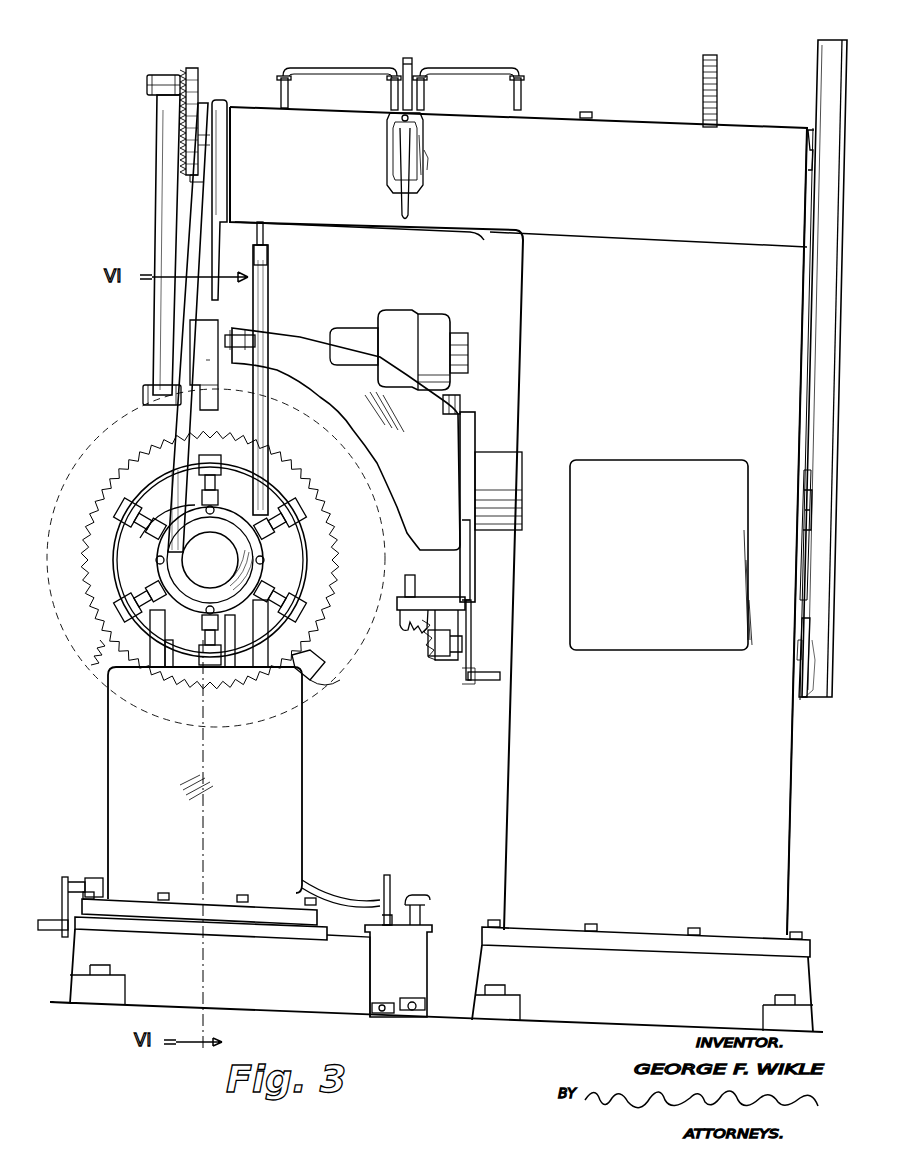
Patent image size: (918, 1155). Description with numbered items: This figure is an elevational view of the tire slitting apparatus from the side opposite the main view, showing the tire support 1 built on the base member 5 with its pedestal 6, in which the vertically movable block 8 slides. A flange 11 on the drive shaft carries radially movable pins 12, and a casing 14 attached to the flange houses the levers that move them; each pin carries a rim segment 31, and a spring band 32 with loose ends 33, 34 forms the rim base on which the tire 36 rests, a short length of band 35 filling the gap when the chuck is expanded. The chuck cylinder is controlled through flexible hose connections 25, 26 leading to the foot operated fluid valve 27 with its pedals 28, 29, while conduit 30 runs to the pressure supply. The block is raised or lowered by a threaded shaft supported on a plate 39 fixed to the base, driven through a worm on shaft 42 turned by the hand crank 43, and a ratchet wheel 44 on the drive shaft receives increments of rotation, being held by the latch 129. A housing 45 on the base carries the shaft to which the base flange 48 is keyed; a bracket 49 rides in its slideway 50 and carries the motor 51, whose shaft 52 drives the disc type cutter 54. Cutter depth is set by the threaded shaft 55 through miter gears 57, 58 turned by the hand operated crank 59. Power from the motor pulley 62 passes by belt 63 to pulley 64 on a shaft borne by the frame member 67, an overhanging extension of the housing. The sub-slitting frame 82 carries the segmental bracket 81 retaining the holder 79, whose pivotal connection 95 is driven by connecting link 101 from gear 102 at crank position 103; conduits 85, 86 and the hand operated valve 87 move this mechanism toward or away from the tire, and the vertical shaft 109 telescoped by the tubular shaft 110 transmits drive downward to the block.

The tire support 1 is at (298, 565).
The base member 5 is at (572, 1022).
The pedestal 6 is at (290, 805).
The vertically movable block 8 is at (262, 667).
The flange 11 is at (165, 508).
The radially movable pins 12 is at (160, 515).
The casing 14 is at (178, 571).
The flexible hose connection 25 is at (340, 890).
The flexible hose connection 26 is at (425, 898).
The foot operated fluid valve 27 is at (378, 975).
The pedal 28 is at (418, 1015).
The pedal 29 is at (390, 1015).
The conduit 30 is at (392, 880).
The rim segment 31 is at (132, 512).
The band 32 is at (130, 662).
The loose end of band 33 is at (175, 668).
The loose end of band 34 is at (232, 667).
The short length of band 35 is at (190, 668).
The tire 36 is at (355, 672).
The plate 39 is at (322, 935).
The shaft 42 is at (72, 876).
The hand crank 43 is at (68, 930).
The ratchet wheel 44 is at (115, 640).
The housing 45 is at (780, 826).
The base flange 48 is at (500, 455).
The bracket 49 is at (466, 395).
The slideway 50 is at (470, 570).
The motor 51 is at (430, 322).
The shaft 52 is at (255, 338).
The disc type cutter 54 is at (268, 305).
The threaded shaft 55 is at (397, 602).
The miter gear 57 is at (410, 635).
The miter gear 58 is at (434, 660).
The hand operated crank 59 is at (484, 682).
The motor pulley 62 is at (810, 695).
The belt 63 is at (825, 40).
The pulley 64 is at (815, 82).
The frame member 67 is at (620, 126).
The holder 79 is at (212, 370).
The segmental bracket 81 is at (178, 435).
The frame 82 is at (222, 100).
The conduit 85 is at (478, 68).
The conduit 86 is at (348, 68).
The hand operated valve 87 is at (424, 186).
The pivotal connection 95 is at (148, 392).
The connecting link 101 is at (158, 133).
The gear 102 is at (190, 68).
The crank position 103 is at (150, 82).
The vertical shaft 109 is at (265, 232).
The tubular vertical shaft 110 is at (268, 256).
The latch 129 is at (310, 680).